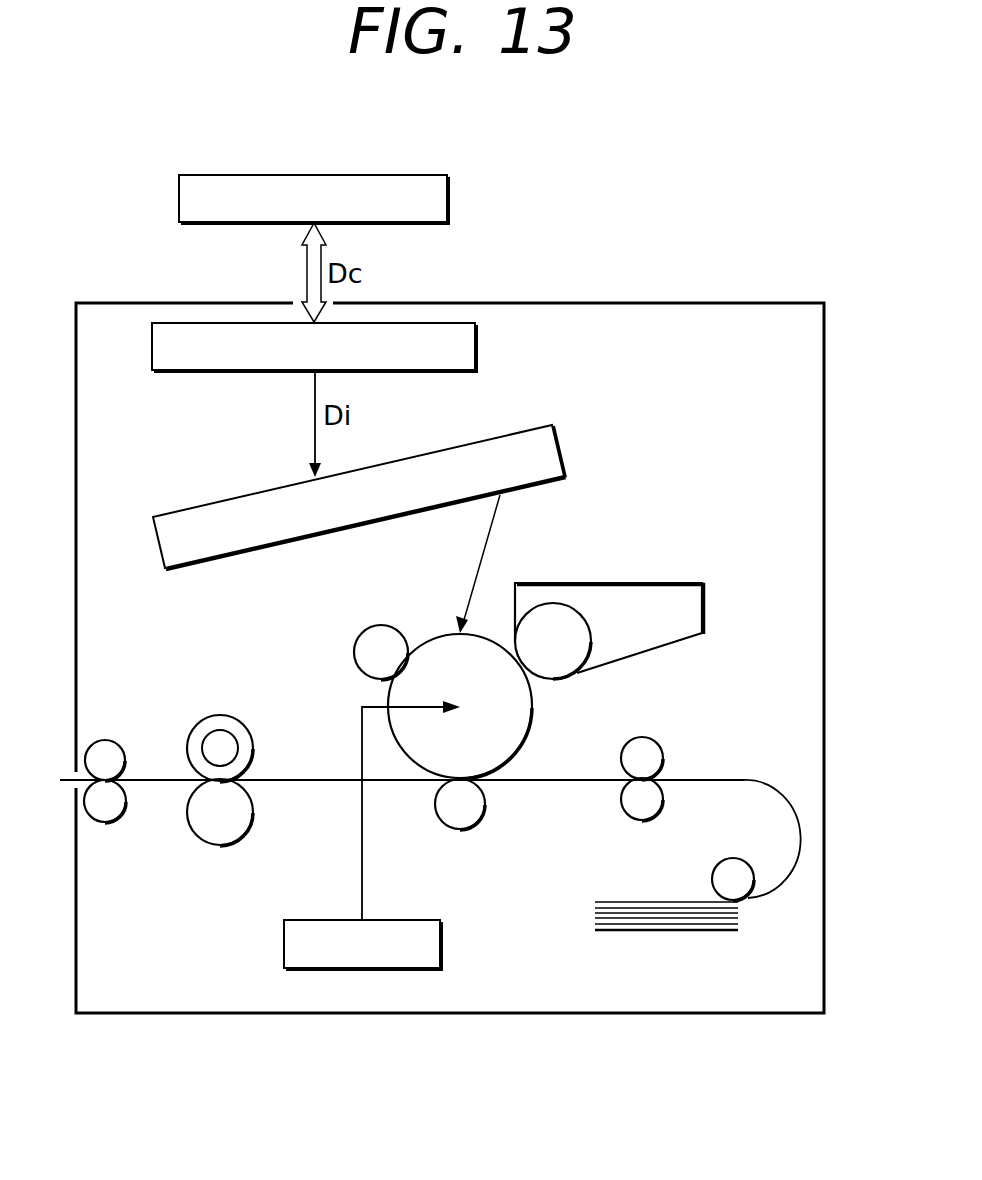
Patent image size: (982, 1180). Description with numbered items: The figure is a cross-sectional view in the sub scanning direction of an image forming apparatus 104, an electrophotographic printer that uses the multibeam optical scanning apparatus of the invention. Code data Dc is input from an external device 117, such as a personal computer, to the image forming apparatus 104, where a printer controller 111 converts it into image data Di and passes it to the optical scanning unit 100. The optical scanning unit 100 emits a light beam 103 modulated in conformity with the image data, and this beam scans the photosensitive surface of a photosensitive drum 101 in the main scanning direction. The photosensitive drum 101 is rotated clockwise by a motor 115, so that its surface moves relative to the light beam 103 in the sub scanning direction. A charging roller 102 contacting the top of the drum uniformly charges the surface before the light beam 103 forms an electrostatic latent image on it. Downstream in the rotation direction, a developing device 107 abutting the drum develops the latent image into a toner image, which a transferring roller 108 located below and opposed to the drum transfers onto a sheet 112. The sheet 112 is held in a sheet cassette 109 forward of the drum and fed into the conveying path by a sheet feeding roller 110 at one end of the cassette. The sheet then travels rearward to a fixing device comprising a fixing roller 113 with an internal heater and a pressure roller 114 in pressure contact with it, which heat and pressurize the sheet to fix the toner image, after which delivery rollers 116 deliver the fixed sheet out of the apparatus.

The optical scanning unit 100 is at (207, 502).
The photosensitive drum 101 is at (522, 723).
The charging roller 102 is at (373, 633).
The light beam 103 is at (487, 549).
The image forming apparatus 104 is at (612, 302).
The developing device 107 is at (637, 590).
The transferring roller 108 is at (478, 802).
The sheet cassette 109 is at (662, 932).
The sheet feeding roller 110 is at (737, 862).
The printer controller 111 is at (475, 347).
The sheet 112 is at (330, 777).
The fixing roller 113 is at (232, 725).
The pressure roller 114 is at (217, 837).
The motor 115 is at (402, 918).
The delivery rollers 116 is at (110, 747).
The external device 117 is at (415, 175).